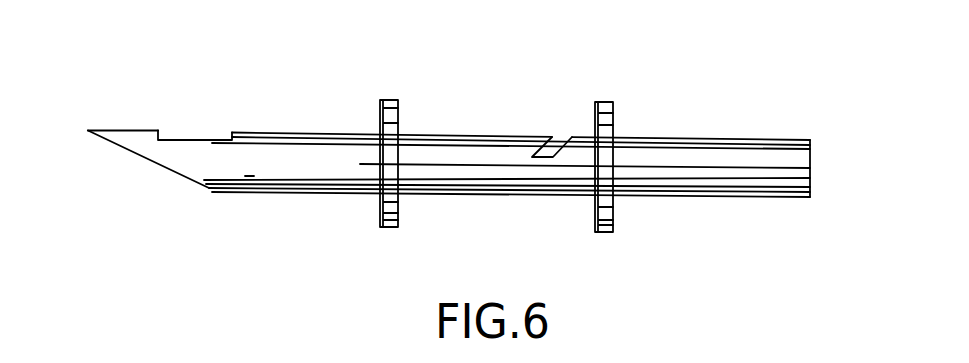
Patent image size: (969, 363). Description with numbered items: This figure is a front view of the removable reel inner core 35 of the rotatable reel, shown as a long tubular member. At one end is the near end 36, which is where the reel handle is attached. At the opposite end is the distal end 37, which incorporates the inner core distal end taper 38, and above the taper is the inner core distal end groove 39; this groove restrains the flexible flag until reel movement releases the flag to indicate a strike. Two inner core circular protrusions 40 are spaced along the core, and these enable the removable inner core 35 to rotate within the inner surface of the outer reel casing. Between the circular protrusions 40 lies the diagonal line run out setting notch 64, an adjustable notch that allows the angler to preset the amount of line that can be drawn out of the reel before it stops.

The removable reel inner core 35 is at (798, 162).
The near end 36 is at (810, 190).
The distal end 37 is at (164, 159).
The inner core distal end taper 38 is at (176, 174).
The inner core distal end groove 39 is at (195, 140).
The inner core circular protrusions 40 is at (398, 215).
The line run out setting notch 64 is at (566, 139).